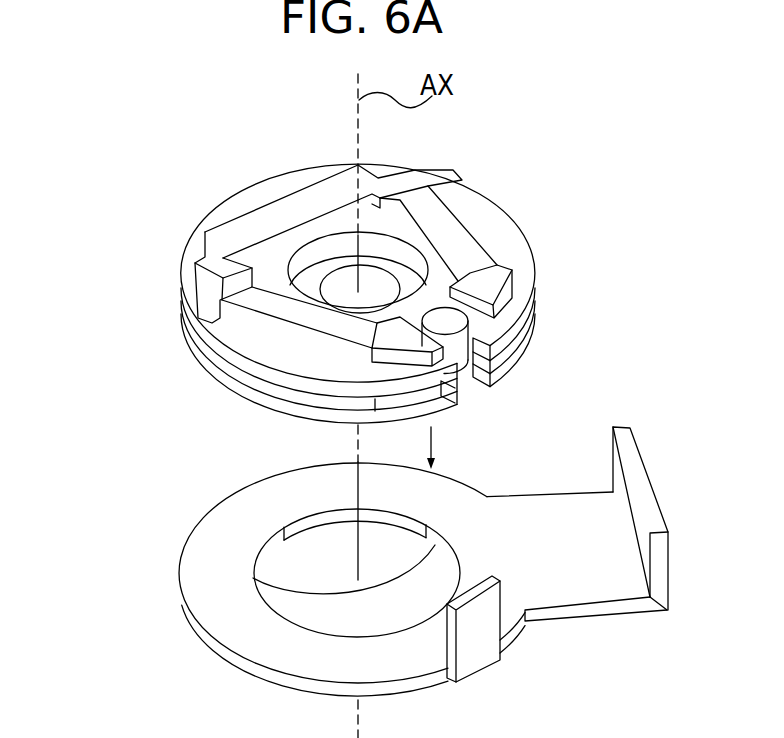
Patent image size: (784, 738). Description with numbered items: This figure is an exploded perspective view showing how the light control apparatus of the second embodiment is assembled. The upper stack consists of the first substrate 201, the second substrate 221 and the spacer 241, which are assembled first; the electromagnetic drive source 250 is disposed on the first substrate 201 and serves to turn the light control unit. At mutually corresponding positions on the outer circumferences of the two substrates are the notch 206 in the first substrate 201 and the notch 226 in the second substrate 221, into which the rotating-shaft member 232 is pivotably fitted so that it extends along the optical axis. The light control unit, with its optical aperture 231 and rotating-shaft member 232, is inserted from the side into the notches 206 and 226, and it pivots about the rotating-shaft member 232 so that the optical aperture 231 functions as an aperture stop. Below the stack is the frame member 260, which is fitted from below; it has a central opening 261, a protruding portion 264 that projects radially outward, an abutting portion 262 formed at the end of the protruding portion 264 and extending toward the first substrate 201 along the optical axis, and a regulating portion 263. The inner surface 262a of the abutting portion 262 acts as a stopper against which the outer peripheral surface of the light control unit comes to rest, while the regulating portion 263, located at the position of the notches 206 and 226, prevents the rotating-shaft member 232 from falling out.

The first substrate 201 is at (190, 288).
The notch 206 is at (512, 333).
The second substrate 221 is at (279, 410).
The spacer 241 is at (217, 362).
The notch 226 is at (453, 393).
The rotating-shaft member 232 is at (448, 320).
The electromagnetic drive source 250 is at (246, 200).
The optical aperture 231 is at (420, 282).
The frame member 260 is at (172, 540).
The opening 261 is at (253, 578).
The protruding portion 264 is at (572, 588).
The abutting portion 262 is at (638, 472).
The inner surface 262a is at (623, 485).
The regulating portion 263 is at (470, 648).